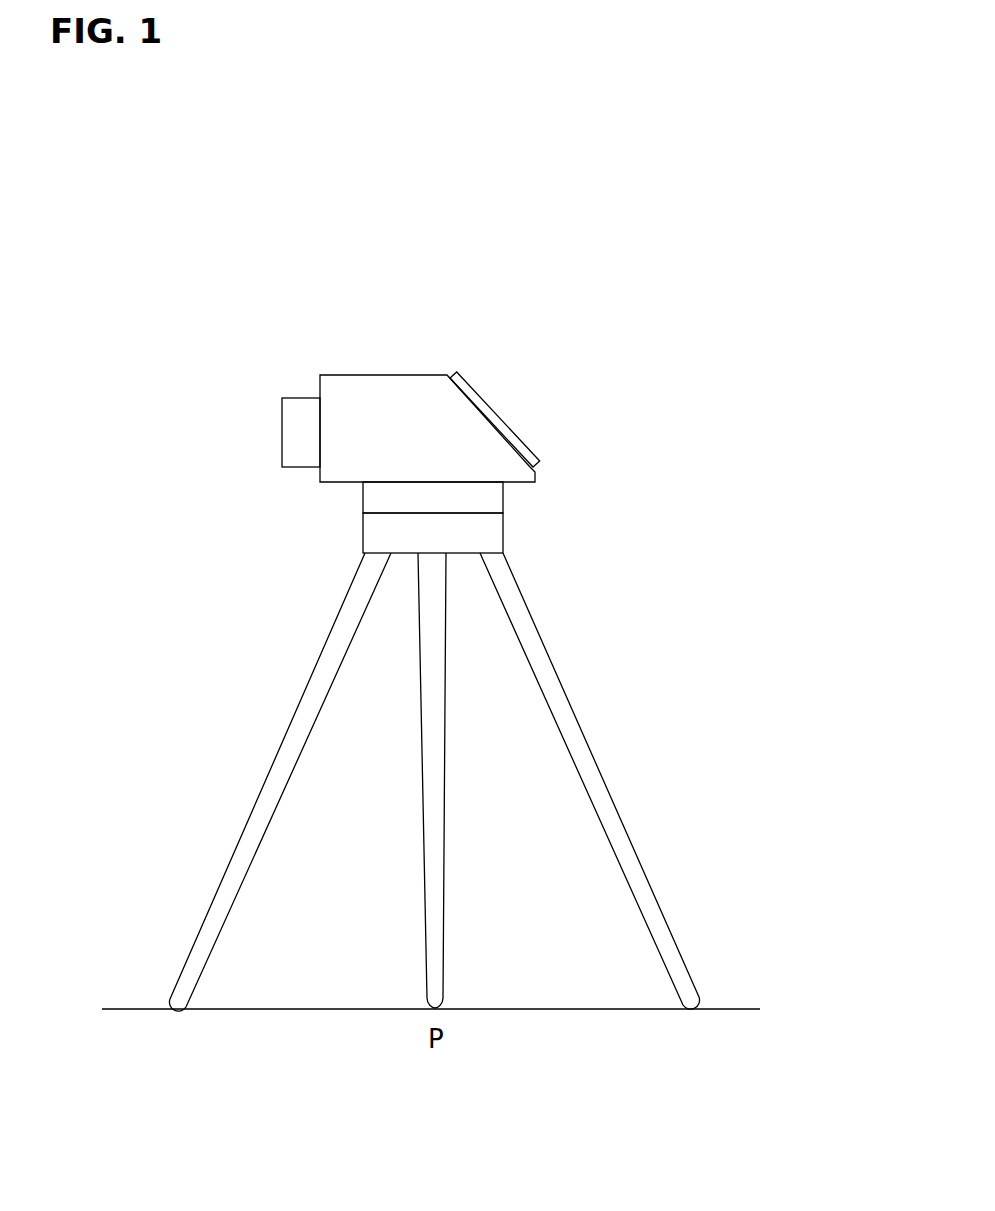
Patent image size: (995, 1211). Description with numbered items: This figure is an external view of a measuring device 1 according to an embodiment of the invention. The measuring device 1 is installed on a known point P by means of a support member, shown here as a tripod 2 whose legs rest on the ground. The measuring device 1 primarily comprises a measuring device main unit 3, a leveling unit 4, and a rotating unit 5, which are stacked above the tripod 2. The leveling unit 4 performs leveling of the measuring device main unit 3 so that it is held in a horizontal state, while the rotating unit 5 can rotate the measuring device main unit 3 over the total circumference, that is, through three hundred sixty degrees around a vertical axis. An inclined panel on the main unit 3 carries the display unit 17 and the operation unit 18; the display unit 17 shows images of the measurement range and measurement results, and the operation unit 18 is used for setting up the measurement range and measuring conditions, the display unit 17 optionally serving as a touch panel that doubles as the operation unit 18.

The measuring device 1 is at (415, 407).
The tripod 2 is at (583, 730).
The measuring device main unit 3 is at (355, 375).
The leveling unit 4 is at (363, 533).
The rotating unit 5 is at (363, 497).
The display unit 17 is at (535, 415).
The operation unit 18 is at (508, 420).